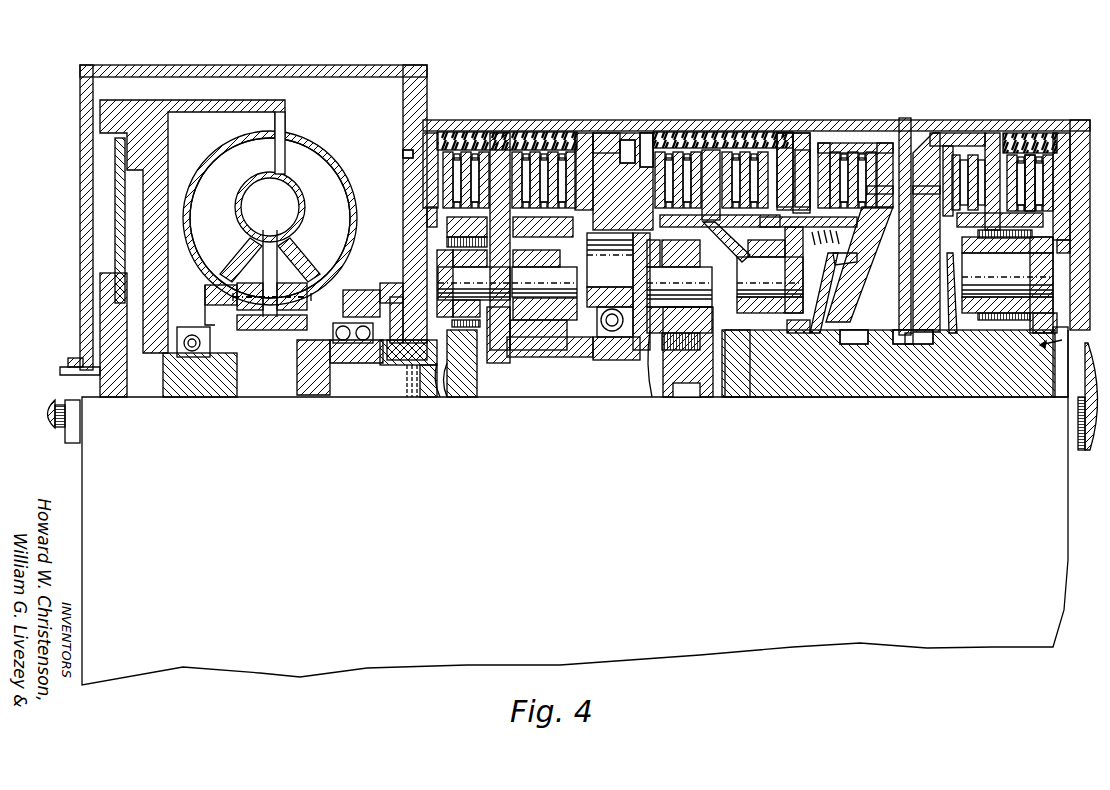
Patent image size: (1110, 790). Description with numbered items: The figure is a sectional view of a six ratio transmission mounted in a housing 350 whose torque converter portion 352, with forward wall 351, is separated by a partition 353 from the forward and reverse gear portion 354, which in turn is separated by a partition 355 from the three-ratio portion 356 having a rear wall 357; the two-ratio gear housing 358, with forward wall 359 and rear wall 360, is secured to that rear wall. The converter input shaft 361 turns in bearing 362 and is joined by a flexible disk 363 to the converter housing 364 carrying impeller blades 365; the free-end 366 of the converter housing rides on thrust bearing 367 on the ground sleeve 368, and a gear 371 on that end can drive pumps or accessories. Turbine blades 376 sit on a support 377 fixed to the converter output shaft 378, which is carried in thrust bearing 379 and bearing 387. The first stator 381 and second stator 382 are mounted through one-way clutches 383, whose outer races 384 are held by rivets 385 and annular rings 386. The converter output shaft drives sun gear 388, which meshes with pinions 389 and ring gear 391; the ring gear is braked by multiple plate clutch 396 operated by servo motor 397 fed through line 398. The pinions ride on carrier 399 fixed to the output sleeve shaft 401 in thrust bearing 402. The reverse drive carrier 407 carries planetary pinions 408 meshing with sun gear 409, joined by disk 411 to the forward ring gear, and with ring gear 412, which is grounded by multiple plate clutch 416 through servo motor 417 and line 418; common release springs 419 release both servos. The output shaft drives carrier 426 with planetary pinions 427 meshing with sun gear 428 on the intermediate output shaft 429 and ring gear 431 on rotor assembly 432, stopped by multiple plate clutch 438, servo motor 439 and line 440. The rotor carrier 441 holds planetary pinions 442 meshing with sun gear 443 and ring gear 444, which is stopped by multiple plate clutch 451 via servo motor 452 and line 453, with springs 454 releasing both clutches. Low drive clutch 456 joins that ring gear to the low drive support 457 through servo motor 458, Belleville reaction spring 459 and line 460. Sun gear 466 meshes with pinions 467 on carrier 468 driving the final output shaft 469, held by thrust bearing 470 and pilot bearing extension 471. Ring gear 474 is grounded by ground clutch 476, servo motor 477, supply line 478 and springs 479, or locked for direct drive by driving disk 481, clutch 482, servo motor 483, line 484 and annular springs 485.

The housing 350 is at (78, 250).
The forward wall 351 is at (80, 150).
The torque converter portion 352 is at (260, 66).
The partition 353 is at (403, 182).
The forward and reverse gear portion 354 is at (495, 120).
The partition 355 is at (548, 272).
The three-ratio portion 356 is at (785, 133).
The rear wall 357 is at (902, 118).
The two-ratio gear housing 358 is at (990, 133).
The forward wall 359 is at (916, 133).
The rear wall 360 is at (1082, 120).
The converter input shaft 361 is at (50, 396).
The bearing 362 is at (68, 360).
The flexible disk 363 is at (115, 200).
The converter housing 364 is at (285, 104).
The impeller blades 365 is at (312, 148).
The free-end 366 is at (340, 326).
The thrust bearing 367 is at (337, 363).
The ground sleeve 368 is at (318, 350).
The gear 371 is at (370, 290).
The turbine blades 376 is at (225, 158).
The support 377 is at (205, 283).
The converter output shaft 378 is at (196, 397).
The thrust bearing 379 is at (182, 357).
The first stator 381 is at (243, 245).
The second stator 382 is at (298, 223).
The one-way clutches 383 is at (262, 330).
The outer races 384 is at (250, 283).
The rivets 385 is at (288, 283).
The annular rings 386 is at (233, 297).
The bearing 387 is at (412, 397).
The sun gear 388 is at (470, 397).
The pinions 389 is at (478, 266).
The ring gear 391 is at (403, 243).
The multiple plate clutch 396 is at (462, 170).
The servo motor 397 is at (427, 214).
The line 398 is at (403, 154).
The carrier 399 is at (514, 357).
The forward and reverse output sleeve shaft 401 is at (540, 397).
The thrust bearing 402 is at (602, 337).
The reverse drive carrier 407 is at (598, 397).
The planetary pinions 408 is at (596, 262).
The sun gear 409 is at (548, 357).
The disk 411 is at (474, 290).
The ring gear 412 is at (623, 241).
The multiple plate clutch 416 is at (535, 170).
The servo motor 417 is at (625, 140).
The line 418 is at (606, 133).
The common release springs 419 is at (470, 133).
The carrier 426 is at (652, 397).
The planetary pinions 427 is at (668, 272).
The sun gear 428 is at (695, 397).
The intermediate output shaft 429 is at (815, 397).
The ring gear 431 is at (610, 244).
The rotor assembly 432 is at (773, 295).
The multiple plate clutch 438 is at (735, 170).
The servo motor 439 is at (664, 165).
The line 440 is at (646, 133).
The carrier 441 is at (808, 310).
The planetary pinions 442 is at (760, 250).
The sun gear 443 is at (760, 397).
The ring gear 444 is at (823, 235).
The multiple plate clutch 451 is at (745, 150).
The servo motor 452 is at (786, 131).
The line 453 is at (800, 150).
The springs 454 is at (710, 150).
The clutch 456 is at (838, 160).
The low drive support 457 is at (850, 143).
The servo motor 458 is at (880, 186).
The Belleville reaction spring 459 is at (812, 335).
The line 460 is at (855, 344).
The sun gear 466 is at (1010, 333).
The pinions 467 is at (1000, 298).
The carrier 468 is at (1040, 350).
The final output shaft 469 is at (1080, 397).
The thrust bearing 470 is at (1062, 352).
The pilot bearing extension 471 is at (1063, 372).
The ring gear 474 is at (1010, 258).
The ground clutch 476 is at (1012, 165).
The servo motor 477 is at (1030, 160).
The supply line 478 is at (1060, 140).
The springs 479 is at (1020, 133).
The driving disk 481 is at (935, 133).
The clutch 482 is at (955, 160).
The servo motor 483 is at (915, 344).
The line 484 is at (905, 344).
The annular springs 485 is at (947, 333).